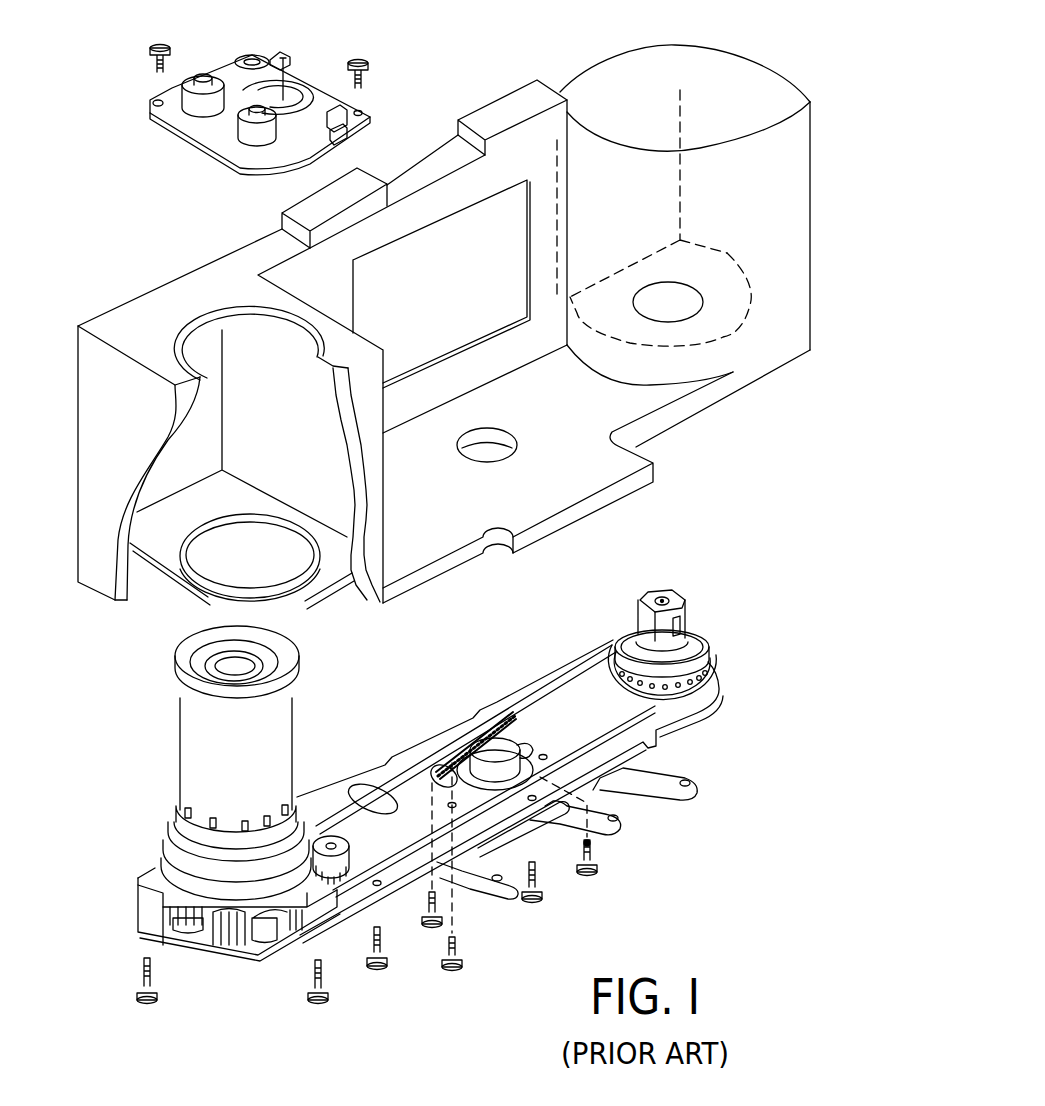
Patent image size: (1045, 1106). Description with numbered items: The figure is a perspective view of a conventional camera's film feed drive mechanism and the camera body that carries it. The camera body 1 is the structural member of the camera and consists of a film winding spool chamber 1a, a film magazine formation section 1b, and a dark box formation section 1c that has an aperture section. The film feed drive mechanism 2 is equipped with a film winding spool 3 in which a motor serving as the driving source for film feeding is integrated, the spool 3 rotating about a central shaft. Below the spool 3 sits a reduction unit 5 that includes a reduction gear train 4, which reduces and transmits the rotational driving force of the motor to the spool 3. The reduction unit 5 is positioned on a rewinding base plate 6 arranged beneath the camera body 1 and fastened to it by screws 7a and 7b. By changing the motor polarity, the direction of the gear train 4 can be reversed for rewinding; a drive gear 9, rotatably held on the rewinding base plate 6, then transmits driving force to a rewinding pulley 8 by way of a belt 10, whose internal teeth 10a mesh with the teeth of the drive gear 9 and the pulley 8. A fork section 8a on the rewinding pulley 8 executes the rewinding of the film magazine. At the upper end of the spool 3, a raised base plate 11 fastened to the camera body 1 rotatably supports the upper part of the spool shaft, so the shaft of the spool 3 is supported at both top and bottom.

The camera body 1 is at (467, 357).
The film winding spool chamber 1a is at (160, 590).
The film magazine formation section 1b is at (769, 215).
The dark box formation section 1c is at (564, 402).
The film feed drive mechanism 2 is at (142, 783).
The film winding spool 3 is at (190, 725).
The reduction gear train 4 is at (257, 947).
The reduction unit 5 is at (145, 912).
The rewinding base plate 6 is at (343, 898).
The screw 7a is at (147, 1007).
The screw 7b is at (317, 1007).
The rewinding pulley 8 is at (687, 657).
The fork section 8a is at (683, 597).
The drive gear 9 is at (330, 808).
The belt 10 is at (516, 739).
The internal teeth 10a is at (508, 725).
The raised base plate 11 is at (228, 72).